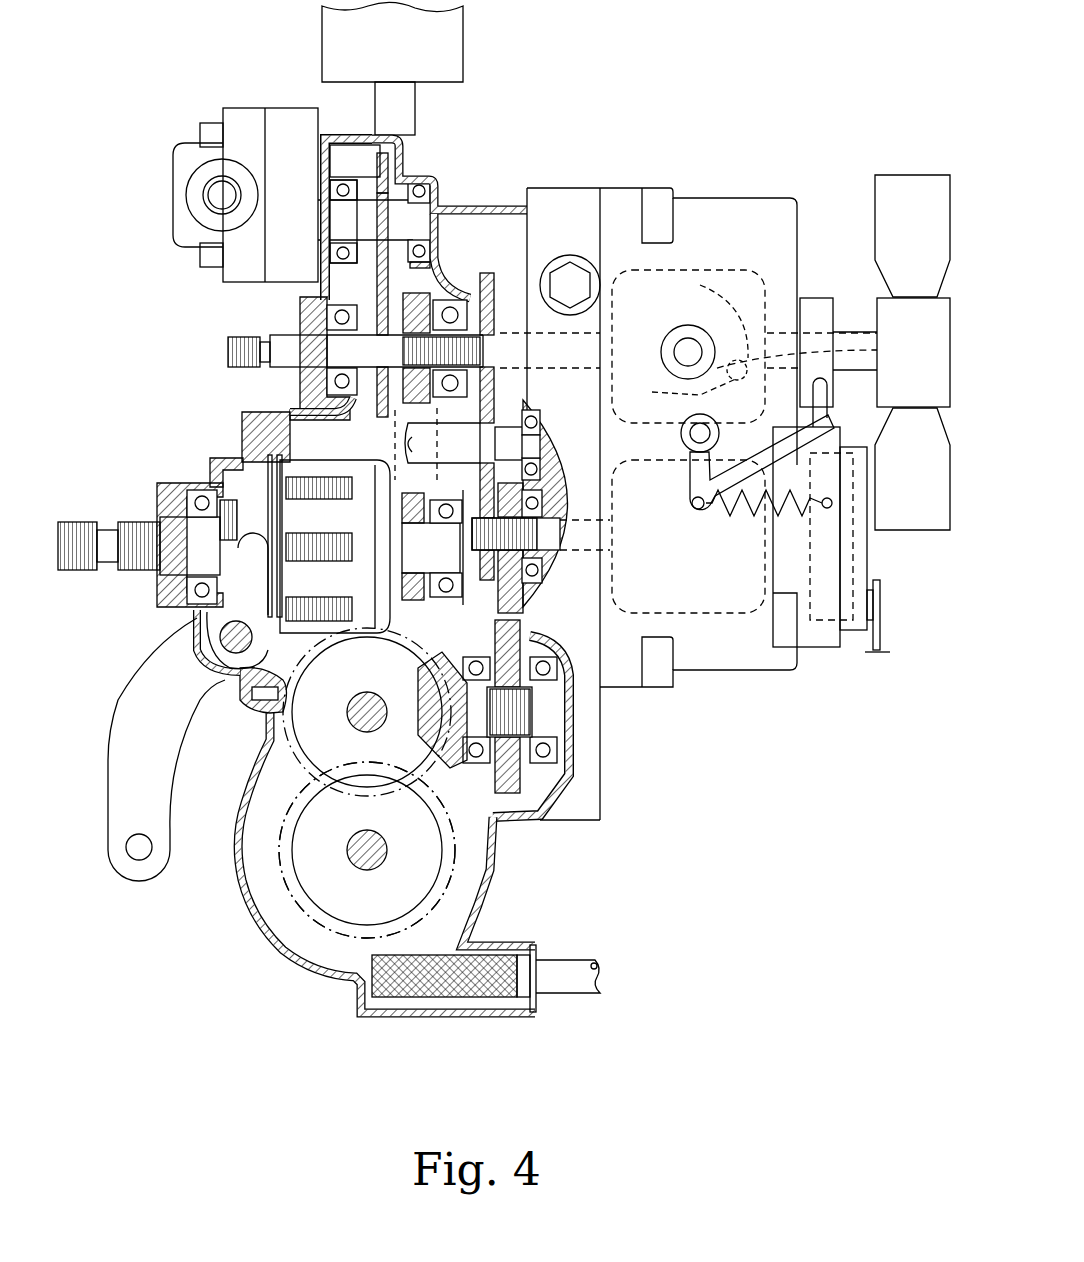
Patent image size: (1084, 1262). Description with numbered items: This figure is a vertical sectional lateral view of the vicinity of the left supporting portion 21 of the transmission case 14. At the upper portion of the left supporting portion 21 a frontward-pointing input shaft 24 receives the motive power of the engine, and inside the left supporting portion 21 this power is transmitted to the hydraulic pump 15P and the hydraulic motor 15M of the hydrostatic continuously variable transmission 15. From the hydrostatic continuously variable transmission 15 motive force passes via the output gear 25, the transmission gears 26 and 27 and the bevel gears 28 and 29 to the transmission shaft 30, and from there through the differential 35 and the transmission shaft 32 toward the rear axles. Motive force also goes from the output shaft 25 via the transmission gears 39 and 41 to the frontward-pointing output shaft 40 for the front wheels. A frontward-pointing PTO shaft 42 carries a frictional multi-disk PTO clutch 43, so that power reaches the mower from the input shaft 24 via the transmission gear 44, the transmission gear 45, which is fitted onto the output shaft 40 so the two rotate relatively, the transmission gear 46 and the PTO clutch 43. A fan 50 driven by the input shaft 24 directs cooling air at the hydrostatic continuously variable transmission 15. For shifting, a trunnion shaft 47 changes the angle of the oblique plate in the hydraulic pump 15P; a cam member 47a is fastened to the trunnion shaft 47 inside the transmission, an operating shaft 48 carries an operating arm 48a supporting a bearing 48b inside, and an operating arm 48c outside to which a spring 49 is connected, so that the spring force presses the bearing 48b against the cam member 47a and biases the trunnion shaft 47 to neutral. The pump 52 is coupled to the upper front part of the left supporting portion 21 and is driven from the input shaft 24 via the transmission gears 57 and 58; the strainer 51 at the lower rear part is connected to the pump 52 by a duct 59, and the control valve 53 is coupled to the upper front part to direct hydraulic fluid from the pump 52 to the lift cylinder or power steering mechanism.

The transmission case 14 is at (263, 937).
The hydrostatic continuously variable transmission 15 is at (765, 195).
The hydraulic pump 15P is at (755, 278).
The hydraulic motor 15M is at (703, 613).
The left supporting portion 21 is at (352, 133).
The input shaft 24 is at (228, 351).
The output gear 25 is at (565, 548).
The transmission gear 26 is at (523, 610).
The transmission gear 27 is at (507, 798).
The bevel gear 28 is at (434, 755).
The bevel gear 29 is at (290, 745).
The transmission shaft 30 is at (358, 730).
The transmission shaft 32 is at (347, 853).
The differential 35 is at (317, 922).
The transmission gear 39 is at (408, 600).
The output shaft 40 is at (517, 410).
The transmission gear 41 is at (487, 378).
The PTO shaft 42 is at (80, 522).
The PTO clutch 43 is at (280, 505).
The transmission gear 44 is at (422, 290).
The transmission gear 45 is at (395, 444).
The transmission gear 46 is at (405, 610).
The trunnion shaft 47 is at (673, 350).
The cam member 47a is at (704, 330).
The operating shaft 48 is at (688, 438).
The operating arm 48a is at (674, 392).
The bearing 48b is at (878, 350).
The operating arm 48c is at (691, 503).
The spring 49 is at (745, 520).
The fan 50 is at (914, 175).
The strainer 51 is at (430, 1000).
The pump 52 is at (232, 112).
The control valve 53 is at (463, 35).
The transmission gear 57 is at (347, 300).
The transmission gear 58 is at (390, 157).
The duct 59 is at (567, 990).